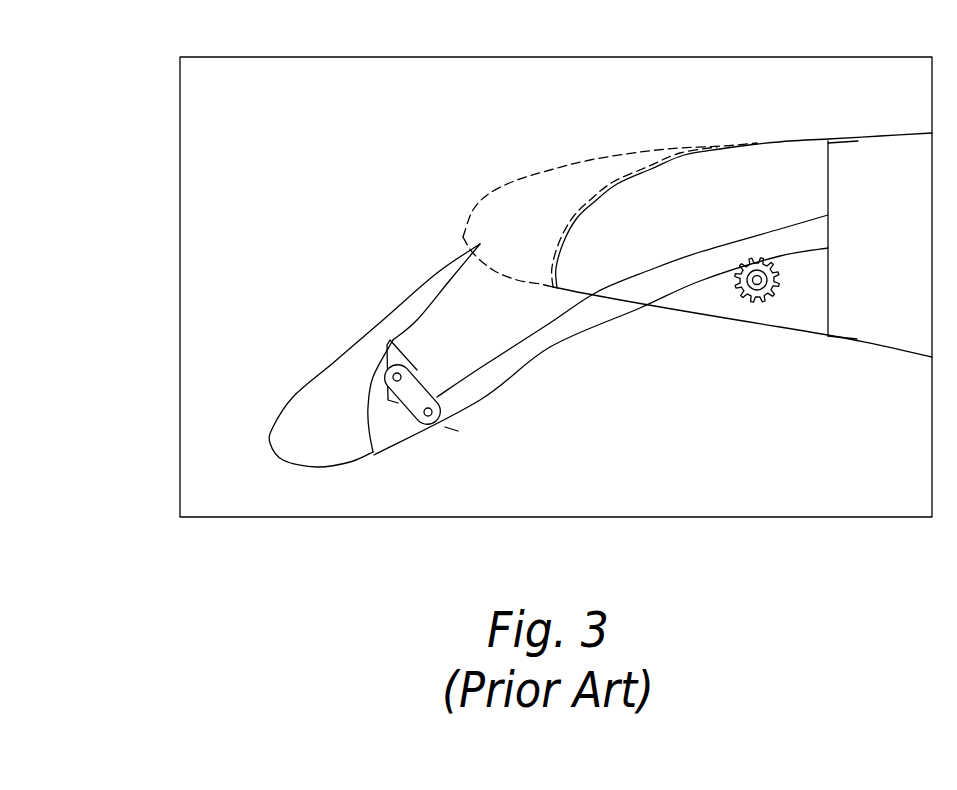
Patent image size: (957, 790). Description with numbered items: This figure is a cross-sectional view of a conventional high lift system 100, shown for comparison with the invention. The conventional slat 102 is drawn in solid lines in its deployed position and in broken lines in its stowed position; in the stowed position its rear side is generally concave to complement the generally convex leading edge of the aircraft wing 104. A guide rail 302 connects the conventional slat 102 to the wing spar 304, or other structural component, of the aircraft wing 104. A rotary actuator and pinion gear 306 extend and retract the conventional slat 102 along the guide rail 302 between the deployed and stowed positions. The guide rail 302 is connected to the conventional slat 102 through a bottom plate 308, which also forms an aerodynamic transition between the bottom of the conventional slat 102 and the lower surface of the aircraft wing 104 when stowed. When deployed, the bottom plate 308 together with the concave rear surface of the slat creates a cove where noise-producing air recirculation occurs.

The conventional high lift system 100 is at (147, 52).
The conventional slat 102 is at (353, 330).
The aircraft wing 104 is at (780, 168).
The guide rail 302 is at (543, 338).
The wing spar 304 is at (828, 187).
The rotary actuator and pinion gear 306 is at (758, 299).
The bottom plate 308 is at (420, 440).